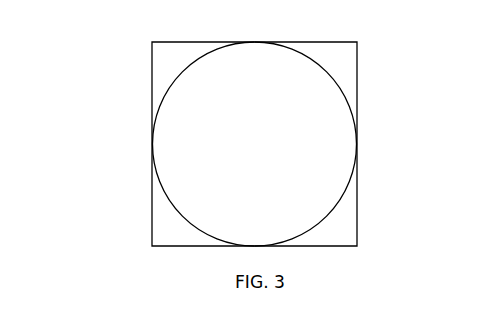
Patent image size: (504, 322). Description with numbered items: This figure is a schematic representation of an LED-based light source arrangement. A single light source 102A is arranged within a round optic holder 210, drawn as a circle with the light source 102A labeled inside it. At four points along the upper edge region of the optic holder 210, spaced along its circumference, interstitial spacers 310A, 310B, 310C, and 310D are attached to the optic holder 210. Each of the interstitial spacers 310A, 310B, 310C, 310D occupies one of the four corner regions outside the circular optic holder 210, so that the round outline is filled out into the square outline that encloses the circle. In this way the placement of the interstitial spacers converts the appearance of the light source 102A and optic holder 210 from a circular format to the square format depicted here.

The interstitial spacer 310A is at (157, 53).
The interstitial spacer 310B is at (353, 53).
The interstitial spacer 310C is at (157, 233).
The interstitial spacer 310D is at (353, 232).
The optic holder 210 is at (153, 143).
The light source 102A is at (255, 134).